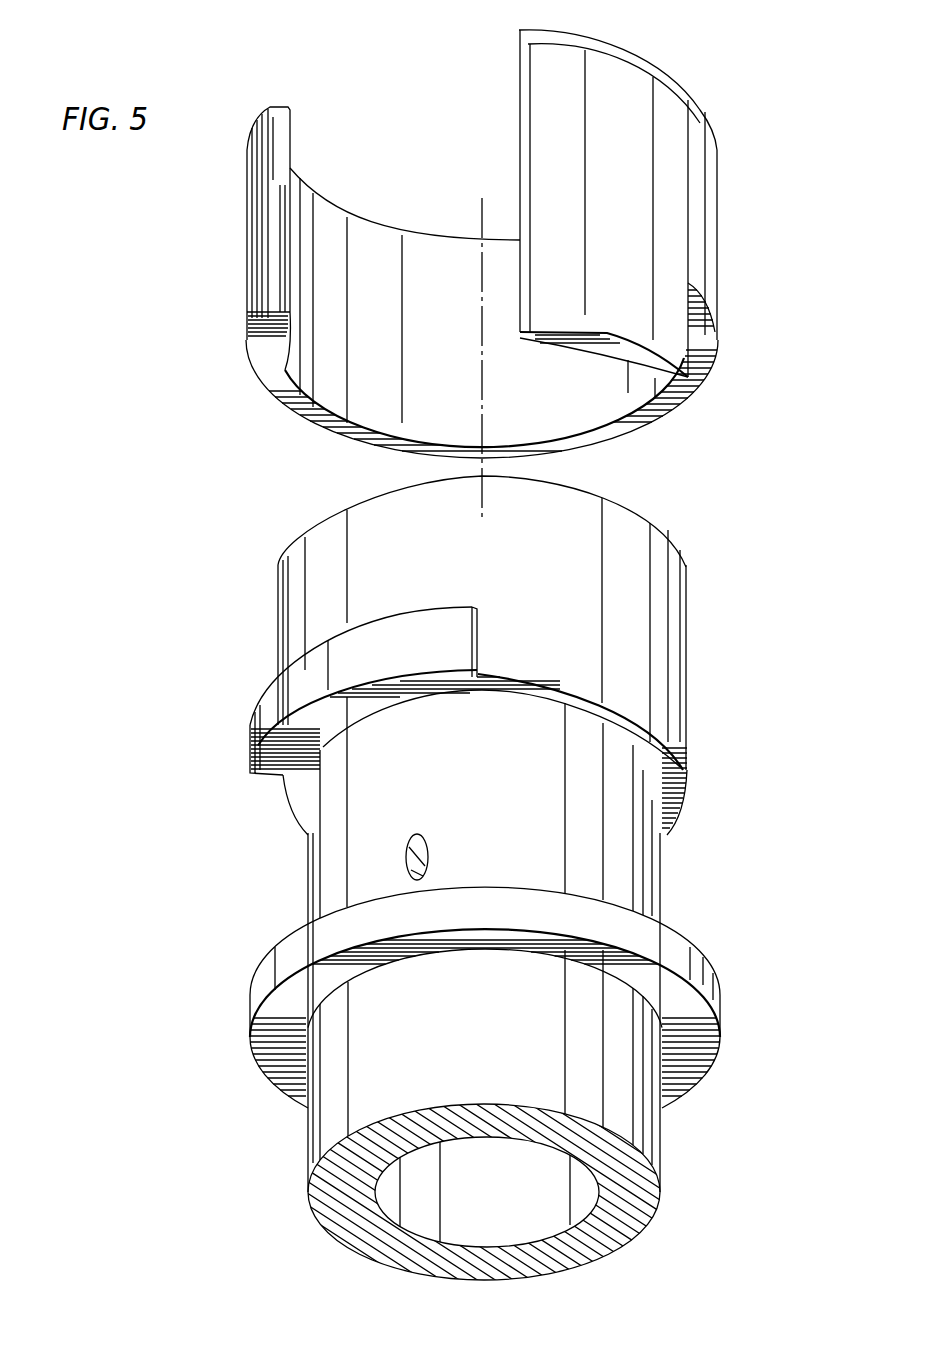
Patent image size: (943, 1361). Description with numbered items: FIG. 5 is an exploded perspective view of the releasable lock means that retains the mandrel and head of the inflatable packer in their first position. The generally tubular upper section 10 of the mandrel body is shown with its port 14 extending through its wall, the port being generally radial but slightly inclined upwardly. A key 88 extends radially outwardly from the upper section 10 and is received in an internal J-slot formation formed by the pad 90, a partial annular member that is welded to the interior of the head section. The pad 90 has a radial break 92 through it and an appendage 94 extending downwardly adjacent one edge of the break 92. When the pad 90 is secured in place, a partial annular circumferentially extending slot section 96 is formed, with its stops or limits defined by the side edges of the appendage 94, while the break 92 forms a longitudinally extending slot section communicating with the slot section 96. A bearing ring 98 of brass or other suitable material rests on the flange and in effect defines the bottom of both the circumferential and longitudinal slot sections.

The upper section 10 is at (637, 858).
The port 14 is at (429, 857).
The key 88 is at (273, 703).
The pad 90 is at (734, 178).
The break 92 is at (278, 140).
The appendage 94 is at (670, 338).
The circumferentially extending slot section 96 is at (700, 360).
The bearing ring 98 is at (262, 982).